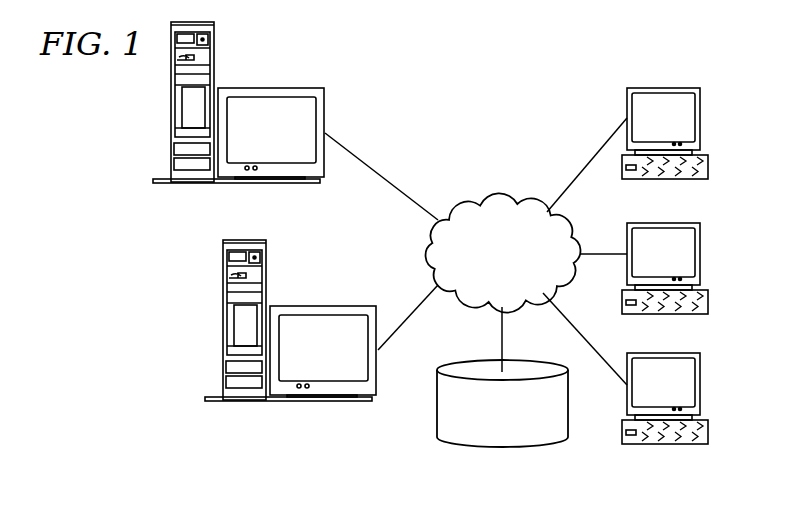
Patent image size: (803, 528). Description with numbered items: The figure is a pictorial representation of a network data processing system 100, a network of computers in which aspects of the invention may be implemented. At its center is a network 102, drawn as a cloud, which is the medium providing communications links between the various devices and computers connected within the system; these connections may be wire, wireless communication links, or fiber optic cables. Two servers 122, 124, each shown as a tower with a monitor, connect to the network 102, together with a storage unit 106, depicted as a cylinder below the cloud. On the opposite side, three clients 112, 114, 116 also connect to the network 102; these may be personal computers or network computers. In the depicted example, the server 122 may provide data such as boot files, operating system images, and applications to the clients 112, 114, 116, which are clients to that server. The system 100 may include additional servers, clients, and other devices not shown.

The network data processing system 100 is at (553, 89).
The network 102 is at (470, 205).
The storage unit 106 is at (520, 447).
The client 112 is at (700, 118).
The client 114 is at (700, 253).
The client 116 is at (700, 383).
The server 122 is at (171, 108).
The server 124 is at (223, 320).